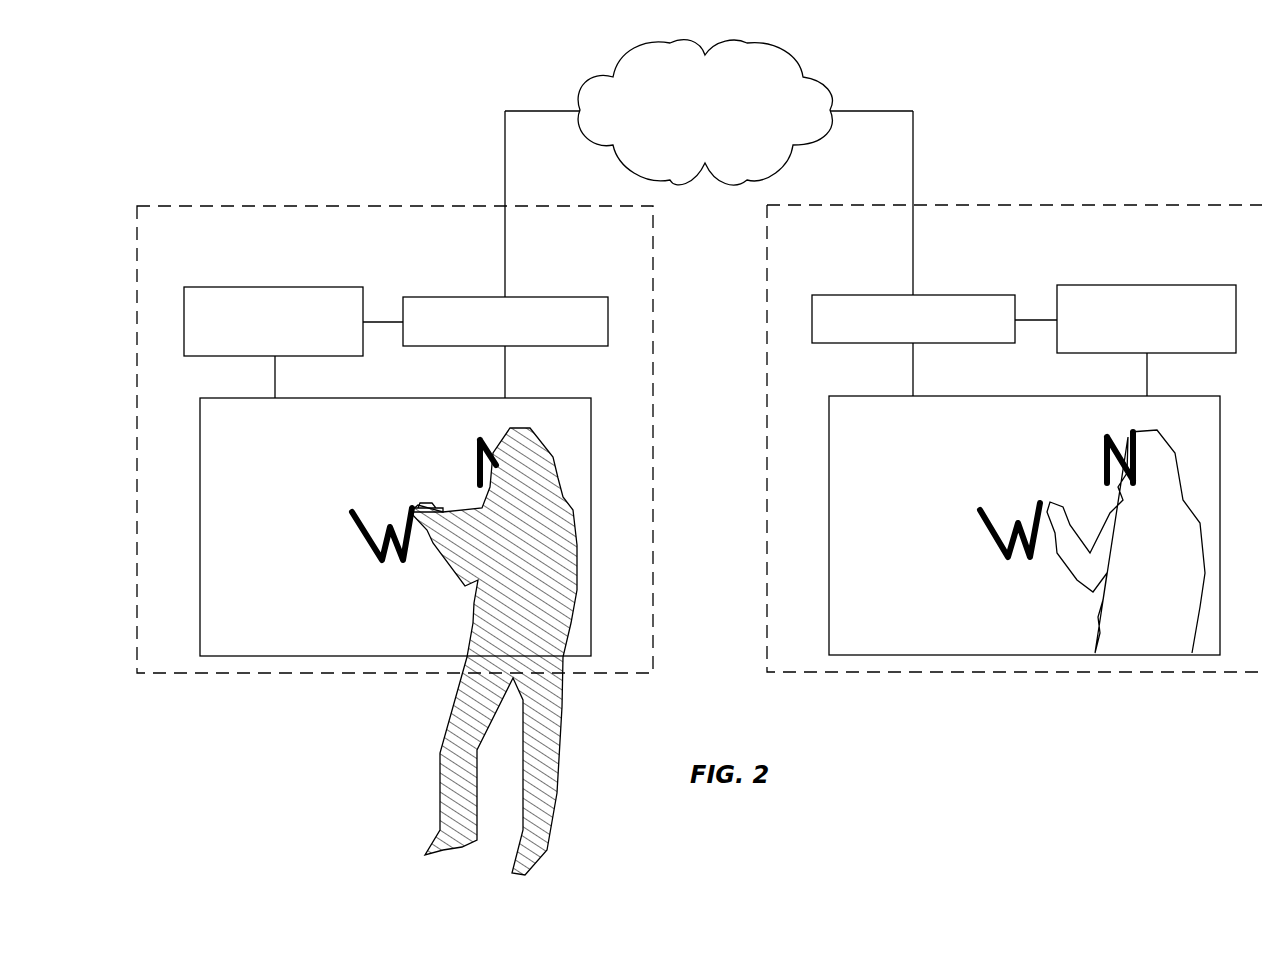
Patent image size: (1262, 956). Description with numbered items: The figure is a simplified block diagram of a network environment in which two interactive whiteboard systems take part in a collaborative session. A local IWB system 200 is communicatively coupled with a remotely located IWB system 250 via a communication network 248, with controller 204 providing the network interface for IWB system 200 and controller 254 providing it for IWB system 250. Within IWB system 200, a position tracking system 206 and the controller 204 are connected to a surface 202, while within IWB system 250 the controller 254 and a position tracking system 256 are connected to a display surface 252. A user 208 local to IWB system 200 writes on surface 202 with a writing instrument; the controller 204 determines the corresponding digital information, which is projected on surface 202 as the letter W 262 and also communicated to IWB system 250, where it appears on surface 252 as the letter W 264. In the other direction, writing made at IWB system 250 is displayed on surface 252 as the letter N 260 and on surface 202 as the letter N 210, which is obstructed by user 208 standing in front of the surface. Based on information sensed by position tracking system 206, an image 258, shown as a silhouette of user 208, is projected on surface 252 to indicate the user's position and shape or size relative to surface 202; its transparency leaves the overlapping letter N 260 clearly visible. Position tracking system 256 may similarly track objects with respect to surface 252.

The IWB system 200 is at (397, 205).
The surface 202 is at (397, 657).
The controller 204 is at (533, 297).
The position tracking system 206 is at (273, 287).
The user 208 is at (560, 707).
The letter N 210 is at (476, 447).
The communication network 248 is at (742, 182).
The IWB system 250 is at (1027, 205).
The display surface 252 is at (1025, 655).
The controller 254 is at (880, 295).
The position tracking system 256 is at (1147, 285).
The image 258 is at (1138, 632).
The letter N 260 is at (1107, 450).
The letter W 262 is at (352, 512).
The letter W 264 is at (980, 510).